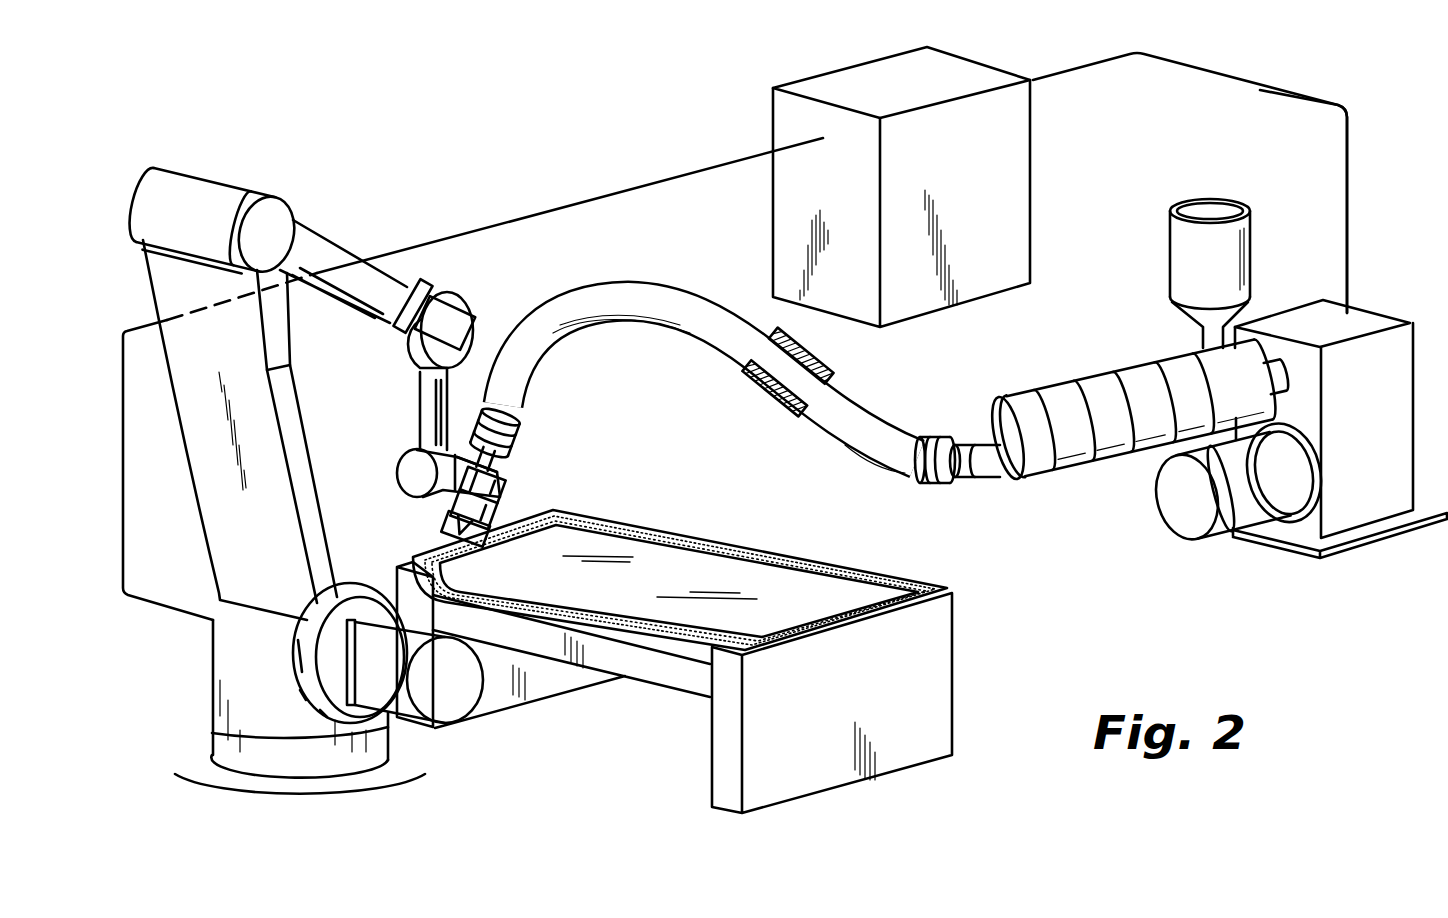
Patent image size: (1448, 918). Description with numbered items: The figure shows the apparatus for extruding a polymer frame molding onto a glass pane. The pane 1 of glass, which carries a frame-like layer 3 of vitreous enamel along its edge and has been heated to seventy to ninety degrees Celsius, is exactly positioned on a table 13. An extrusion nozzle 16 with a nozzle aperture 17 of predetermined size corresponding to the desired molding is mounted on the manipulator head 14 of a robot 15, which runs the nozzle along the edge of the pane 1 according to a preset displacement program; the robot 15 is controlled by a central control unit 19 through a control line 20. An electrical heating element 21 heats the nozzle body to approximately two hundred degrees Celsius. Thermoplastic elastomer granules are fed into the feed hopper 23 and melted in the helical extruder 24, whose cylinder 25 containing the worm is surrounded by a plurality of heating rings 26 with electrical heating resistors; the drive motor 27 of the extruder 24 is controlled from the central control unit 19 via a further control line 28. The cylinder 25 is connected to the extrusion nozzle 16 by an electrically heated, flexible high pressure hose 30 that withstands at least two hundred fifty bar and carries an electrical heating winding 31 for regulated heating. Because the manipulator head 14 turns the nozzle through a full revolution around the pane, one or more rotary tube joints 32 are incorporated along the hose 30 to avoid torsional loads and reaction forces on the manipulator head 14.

The pane of glass 1 is at (668, 575).
The frame-like layer of vitreous enamel 3 is at (745, 565).
The table 13 is at (935, 630).
The manipulator head 14 is at (399, 458).
The robot 15 is at (329, 228).
The extrusion nozzle 16 is at (495, 520).
The nozzle aperture 17 is at (445, 526).
The central control unit 19 is at (822, 93).
The control line 20 is at (556, 208).
The electrical heating element 21 is at (502, 480).
The feed hopper 23 is at (1228, 255).
The helical extruder 24 is at (1400, 318).
The cylinder 25 is at (998, 466).
The heating rings 26 is at (1045, 395).
The drive motor 27 is at (1178, 510).
The control line 28 is at (1275, 85).
The high pressure hose 30 is at (626, 283).
The electrical heating winding 31 is at (776, 390).
The rotary tube joints 32 is at (520, 433).